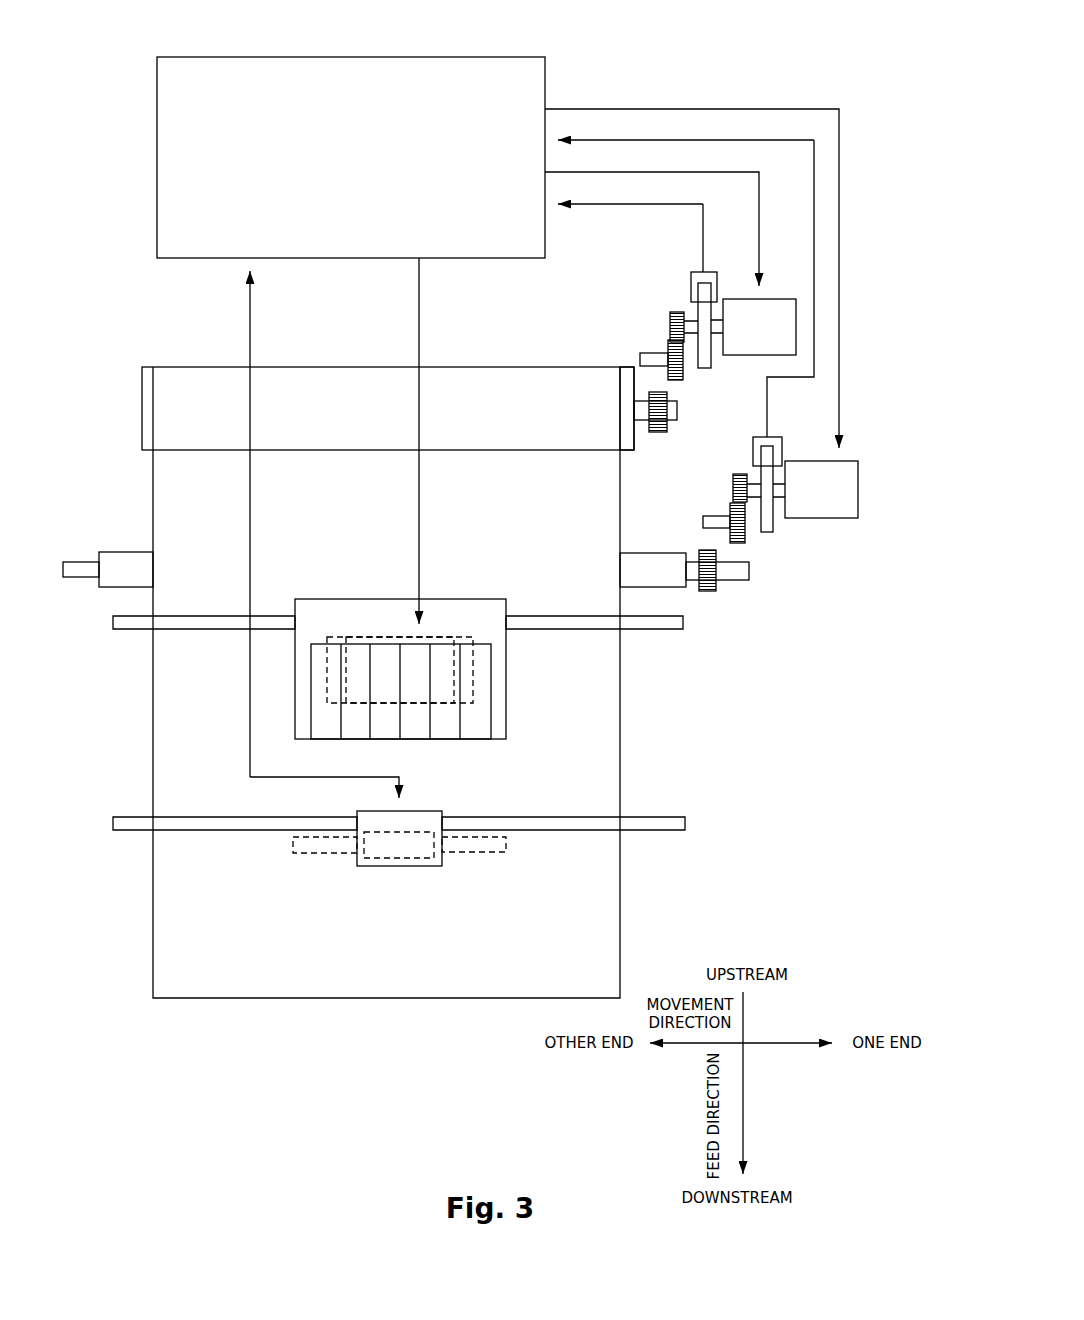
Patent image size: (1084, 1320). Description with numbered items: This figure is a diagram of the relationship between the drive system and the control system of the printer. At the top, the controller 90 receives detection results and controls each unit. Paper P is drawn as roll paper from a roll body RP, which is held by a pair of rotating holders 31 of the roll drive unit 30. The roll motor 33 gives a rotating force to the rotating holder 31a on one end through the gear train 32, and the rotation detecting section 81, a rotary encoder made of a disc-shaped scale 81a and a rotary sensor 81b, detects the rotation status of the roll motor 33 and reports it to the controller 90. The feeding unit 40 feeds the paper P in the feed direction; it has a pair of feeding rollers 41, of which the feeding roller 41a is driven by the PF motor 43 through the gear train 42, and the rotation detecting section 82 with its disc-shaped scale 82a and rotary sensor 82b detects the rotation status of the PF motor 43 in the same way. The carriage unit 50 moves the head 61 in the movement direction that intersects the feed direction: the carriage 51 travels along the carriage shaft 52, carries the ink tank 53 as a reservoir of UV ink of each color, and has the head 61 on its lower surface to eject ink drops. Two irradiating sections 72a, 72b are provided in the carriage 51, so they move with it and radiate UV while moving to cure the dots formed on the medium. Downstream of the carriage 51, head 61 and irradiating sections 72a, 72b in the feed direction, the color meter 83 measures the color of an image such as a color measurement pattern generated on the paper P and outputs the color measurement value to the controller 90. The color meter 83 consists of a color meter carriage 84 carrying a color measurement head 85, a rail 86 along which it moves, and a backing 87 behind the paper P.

The controller 90 is at (257, 57).
The paper P is at (527, 993).
The roll body RP is at (336, 378).
The roll drive unit 30 is at (399, 380).
The rotating holder 31 is at (358, 371).
The rotating holder 31a is at (626, 372).
The gear train 32 is at (653, 348).
The roll motor 33 is at (772, 298).
The rotation detecting section 81 is at (701, 307).
The disc-shaped scale 81a is at (711, 368).
The rotary sensor 81b is at (709, 272).
The feeding unit 40 is at (463, 518).
The pair of feeding rollers 41 is at (419, 599).
The feeding roller 41a is at (684, 590).
The gear train 42 is at (690, 546).
The PF motor 43 is at (835, 520).
The rotation detecting section 82 is at (767, 488).
The disc-shaped scale 82a is at (767, 532).
The rotary sensor 82b is at (758, 437).
The carriage unit 50 is at (398, 637).
The carriage 51 is at (318, 598).
The carriage shaft 52 is at (212, 632).
The ink tank 53 is at (491, 708).
The head 61 is at (383, 638).
The irradiating section 72a is at (471, 638).
The irradiating section 72b is at (328, 637).
The color meter 83 is at (399, 880).
The color meter carriage 84 is at (372, 868).
The color measurement head 85 is at (414, 868).
The rail 86 is at (305, 832).
The backing 87 is at (320, 855).